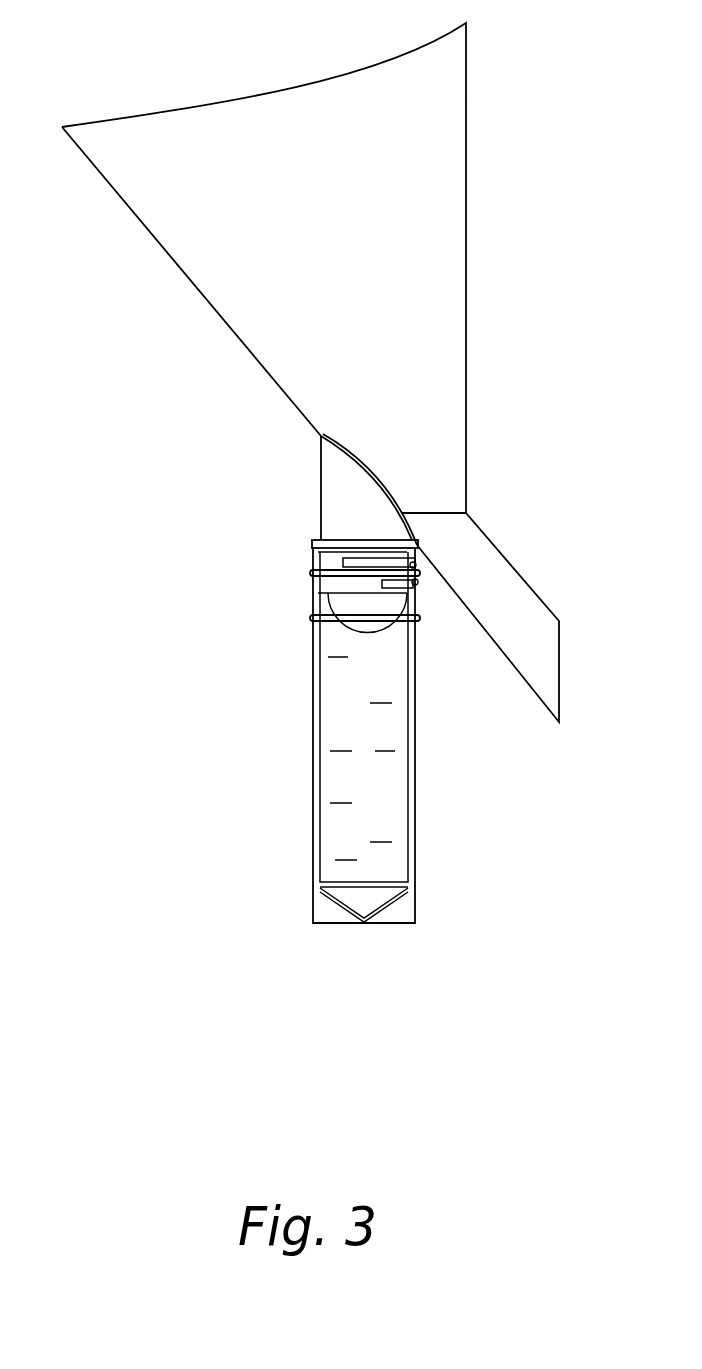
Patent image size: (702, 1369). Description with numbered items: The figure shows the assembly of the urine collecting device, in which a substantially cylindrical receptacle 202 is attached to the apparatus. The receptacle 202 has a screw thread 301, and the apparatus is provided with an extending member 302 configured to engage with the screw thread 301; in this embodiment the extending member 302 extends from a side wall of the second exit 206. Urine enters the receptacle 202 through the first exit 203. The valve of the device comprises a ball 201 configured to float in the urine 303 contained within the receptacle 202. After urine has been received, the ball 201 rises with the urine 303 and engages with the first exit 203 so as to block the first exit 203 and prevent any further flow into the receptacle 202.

The ball 201 is at (318, 618).
The receptacle 202 is at (320, 705).
The first exit 203 is at (325, 470).
The second exit 206 is at (533, 607).
The screw thread 301 is at (318, 573).
The extending member 302 is at (418, 580).
The urine 303 is at (400, 820).